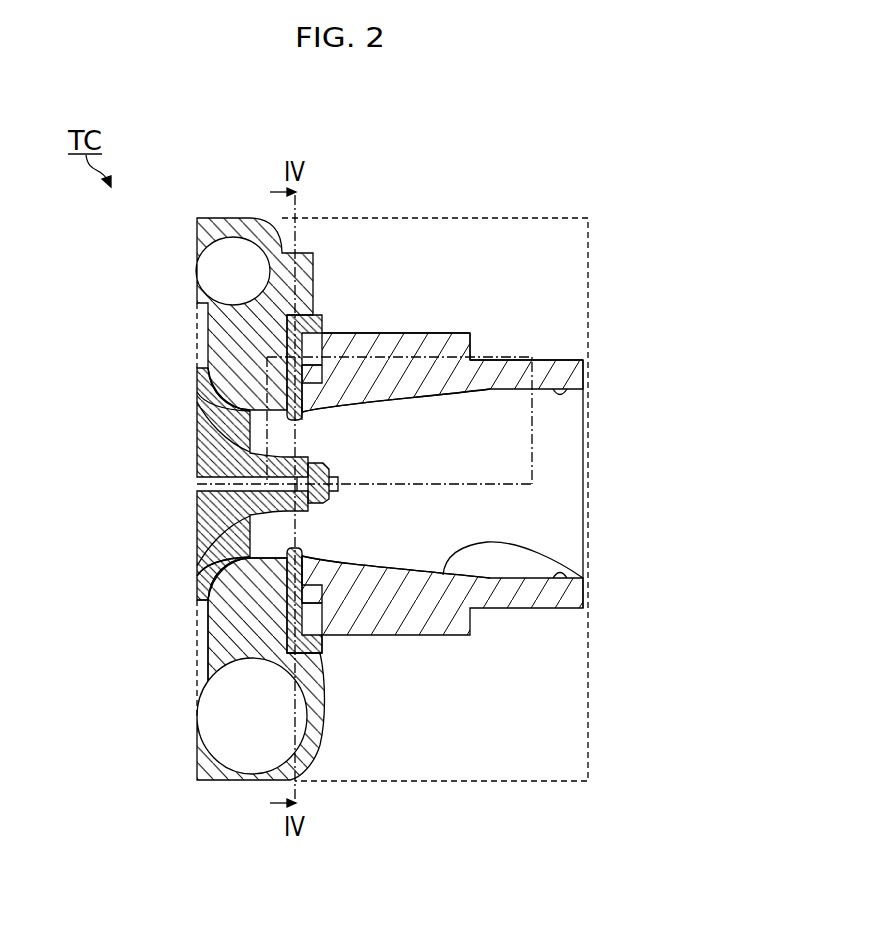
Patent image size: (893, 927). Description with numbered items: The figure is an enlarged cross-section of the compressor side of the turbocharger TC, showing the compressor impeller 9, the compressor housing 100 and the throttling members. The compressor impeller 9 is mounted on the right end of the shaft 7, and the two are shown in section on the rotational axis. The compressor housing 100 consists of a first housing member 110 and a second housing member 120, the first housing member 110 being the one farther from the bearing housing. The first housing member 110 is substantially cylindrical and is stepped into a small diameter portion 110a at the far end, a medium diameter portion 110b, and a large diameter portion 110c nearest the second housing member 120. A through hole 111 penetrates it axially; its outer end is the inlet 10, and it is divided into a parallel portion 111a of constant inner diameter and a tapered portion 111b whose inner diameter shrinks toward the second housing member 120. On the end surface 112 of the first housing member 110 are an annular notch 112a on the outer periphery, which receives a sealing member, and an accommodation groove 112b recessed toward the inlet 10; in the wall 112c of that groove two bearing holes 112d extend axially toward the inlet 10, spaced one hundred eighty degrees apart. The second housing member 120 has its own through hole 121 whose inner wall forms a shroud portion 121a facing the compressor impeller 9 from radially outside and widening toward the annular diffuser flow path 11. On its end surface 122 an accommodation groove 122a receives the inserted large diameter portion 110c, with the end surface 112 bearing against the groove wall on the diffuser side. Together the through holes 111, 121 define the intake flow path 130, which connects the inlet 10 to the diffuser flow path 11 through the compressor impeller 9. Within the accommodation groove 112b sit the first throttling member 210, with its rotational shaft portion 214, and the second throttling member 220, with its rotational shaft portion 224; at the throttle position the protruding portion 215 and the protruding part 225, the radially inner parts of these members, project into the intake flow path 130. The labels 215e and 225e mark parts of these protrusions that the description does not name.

The shaft 7 is at (207, 485).
The compressor impeller 9 is at (203, 385).
The inlet 10 is at (588, 557).
The diffuser flow path 11 is at (197, 332).
The compressor housing 100 is at (570, 360).
The first housing member 110 is at (532, 360).
The small diameter portion 110a is at (492, 360).
The medium diameter portion 110b is at (448, 333).
The large diameter portion 110c is at (320, 316).
The through hole 111 is at (586, 358).
The parallel portion 111a is at (583, 610).
The tapered portion 111b is at (583, 578).
The end surface 112 is at (213, 637).
The notch 112a is at (212, 664).
The accommodation groove 112b is at (217, 623).
The wall 112c is at (207, 557).
The bearing hole 112d is at (213, 587).
The second housing member 120 is at (248, 218).
The through hole 121 is at (226, 440).
The shroud portion 121a is at (227, 413).
The end surface 122 is at (316, 268).
The accommodation groove 122a is at (322, 637).
The intake flow path 130 is at (452, 531).
The first throttling member 210 is at (302, 413).
The rotational shaft portion 214 is at (302, 412).
The protruding portion 215 is at (302, 415).
The seal member edge 215e is at (302, 414).
The second throttling member 220 is at (300, 548).
The rotational shaft portion 224 is at (333, 592).
The protruding part 225 is at (302, 560).
The lower seal member edge 225e is at (301, 554).